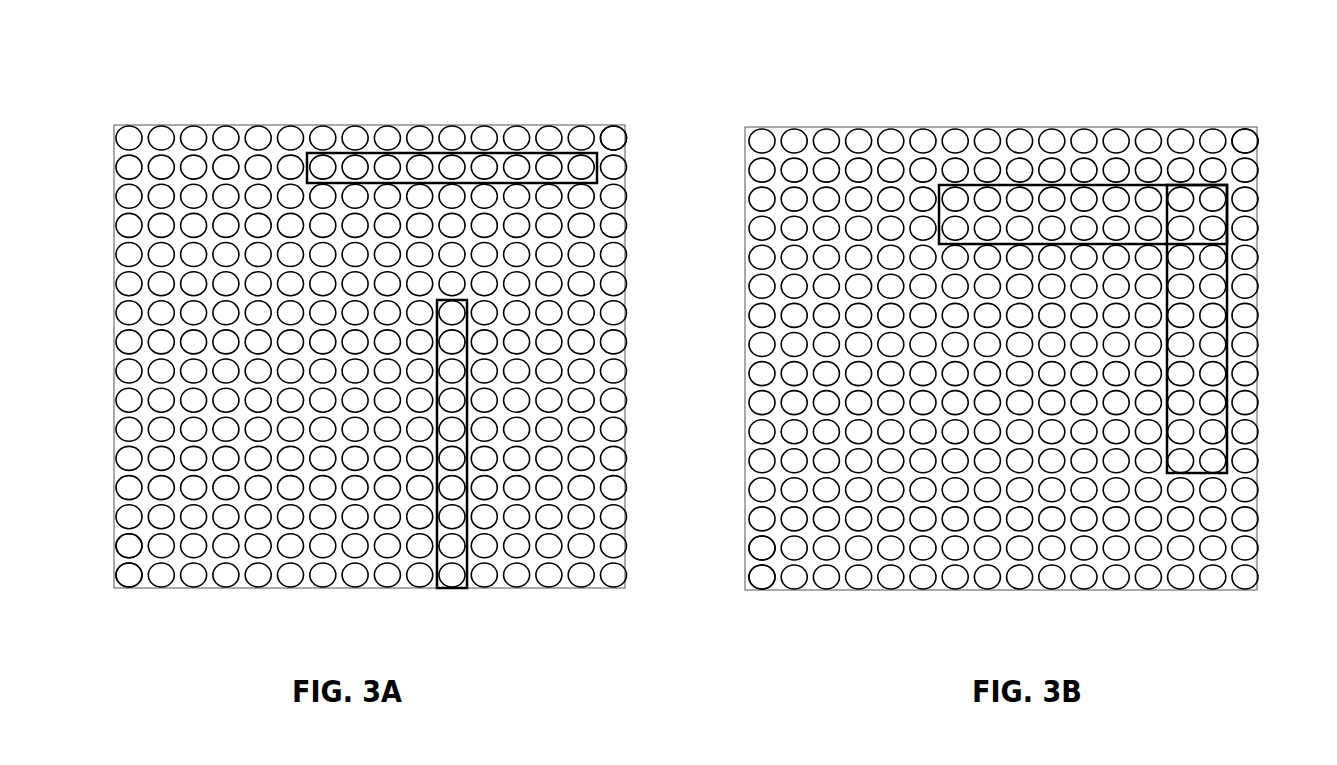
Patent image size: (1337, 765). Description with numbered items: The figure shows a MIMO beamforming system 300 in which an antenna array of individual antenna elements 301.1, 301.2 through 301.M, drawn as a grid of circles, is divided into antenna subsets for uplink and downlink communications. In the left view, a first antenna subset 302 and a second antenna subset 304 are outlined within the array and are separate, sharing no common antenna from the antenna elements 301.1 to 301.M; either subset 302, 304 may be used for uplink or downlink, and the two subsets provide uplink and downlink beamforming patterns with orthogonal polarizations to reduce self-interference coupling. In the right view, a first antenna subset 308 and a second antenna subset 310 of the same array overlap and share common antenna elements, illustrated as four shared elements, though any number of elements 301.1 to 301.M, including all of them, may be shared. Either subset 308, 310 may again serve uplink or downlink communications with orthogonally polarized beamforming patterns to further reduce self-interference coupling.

In FIG. 3A, the MIMO beamforming system 300 is at (592, 100).
In FIG. 3B, the MIMO beamforming system 300 is at (1206, 89).
In FIG. 3A, the antenna element 301.1 is at (120, 574).
In FIG. 3B, the antenna element 301.1 is at (758, 575).
In FIG. 3A, the antenna element 301.2 is at (120, 545).
In FIG. 3B, the antenna element 301.2 is at (760, 548).
In FIG. 3A, the antenna element 301.M is at (621, 141).
In FIG. 3B, the antenna element 301.M is at (1275, 112).
In FIG. 3A, the first antenna subset 302 is at (322, 153).
In FIG. 3A, the second antenna subset 304 is at (468, 590).
In FIG. 3B, the first antenna subset 308 is at (1003, 185).
In FIG. 3B, the second antenna subset 310 is at (1228, 420).